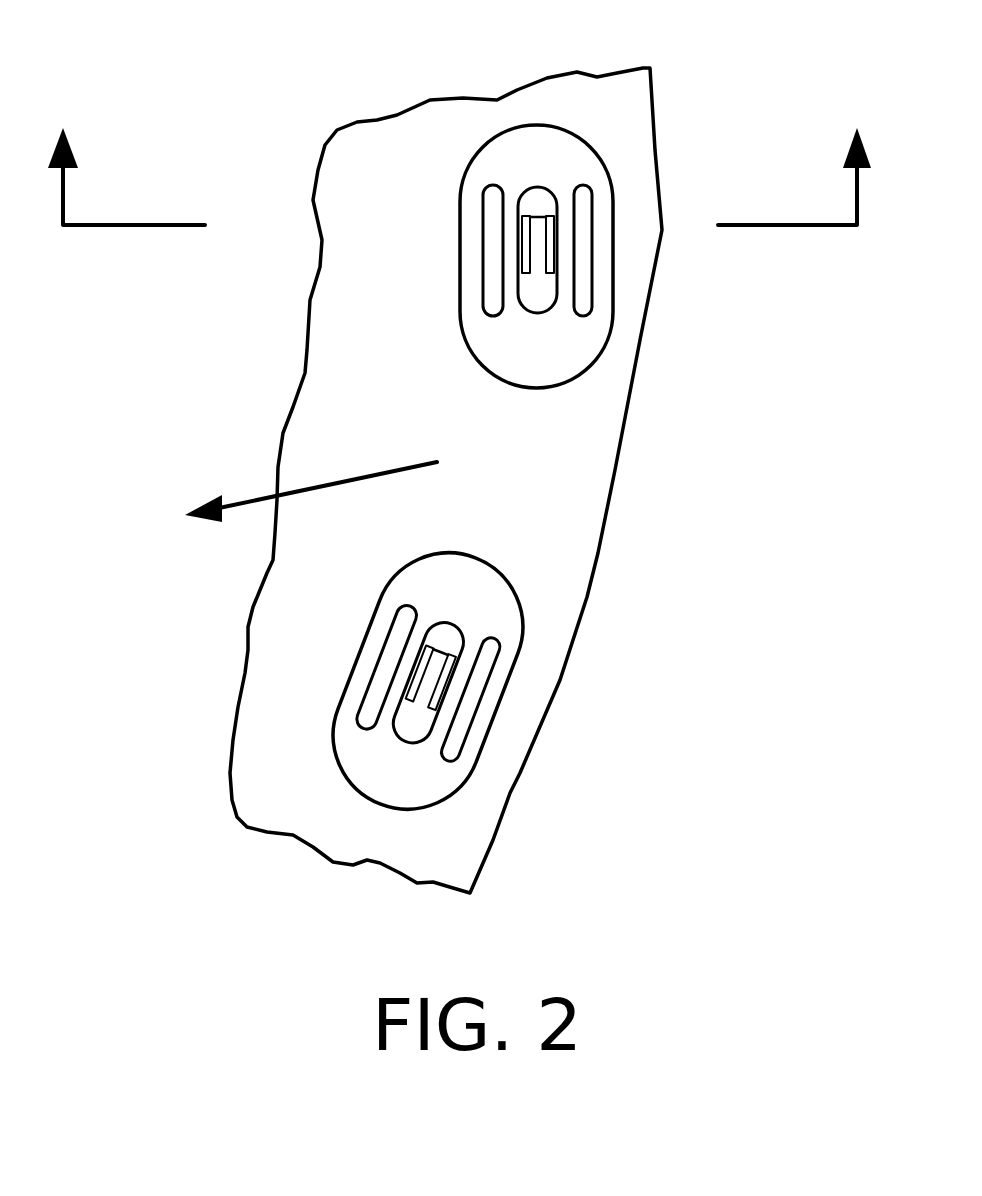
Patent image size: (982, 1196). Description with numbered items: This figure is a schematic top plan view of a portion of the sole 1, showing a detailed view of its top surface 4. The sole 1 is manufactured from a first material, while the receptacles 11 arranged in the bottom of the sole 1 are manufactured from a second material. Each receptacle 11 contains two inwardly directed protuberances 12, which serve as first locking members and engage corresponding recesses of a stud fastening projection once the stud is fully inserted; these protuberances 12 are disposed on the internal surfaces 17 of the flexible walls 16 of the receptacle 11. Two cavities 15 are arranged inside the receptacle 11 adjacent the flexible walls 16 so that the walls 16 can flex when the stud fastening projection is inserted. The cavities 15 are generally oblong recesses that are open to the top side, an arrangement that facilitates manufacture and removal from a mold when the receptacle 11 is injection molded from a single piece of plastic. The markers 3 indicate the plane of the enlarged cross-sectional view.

The sole 1 is at (635, 518).
The section line 3- 3 is at (460, 304).
The top surface 4 is at (297, 722).
The receptacle 11 is at (537, 200).
The inwardly directed protuberances 12 is at (527, 217).
The cavities 15 is at (490, 237).
The flexible walls 16 is at (513, 217).
The internal surfaces 17 is at (547, 207).